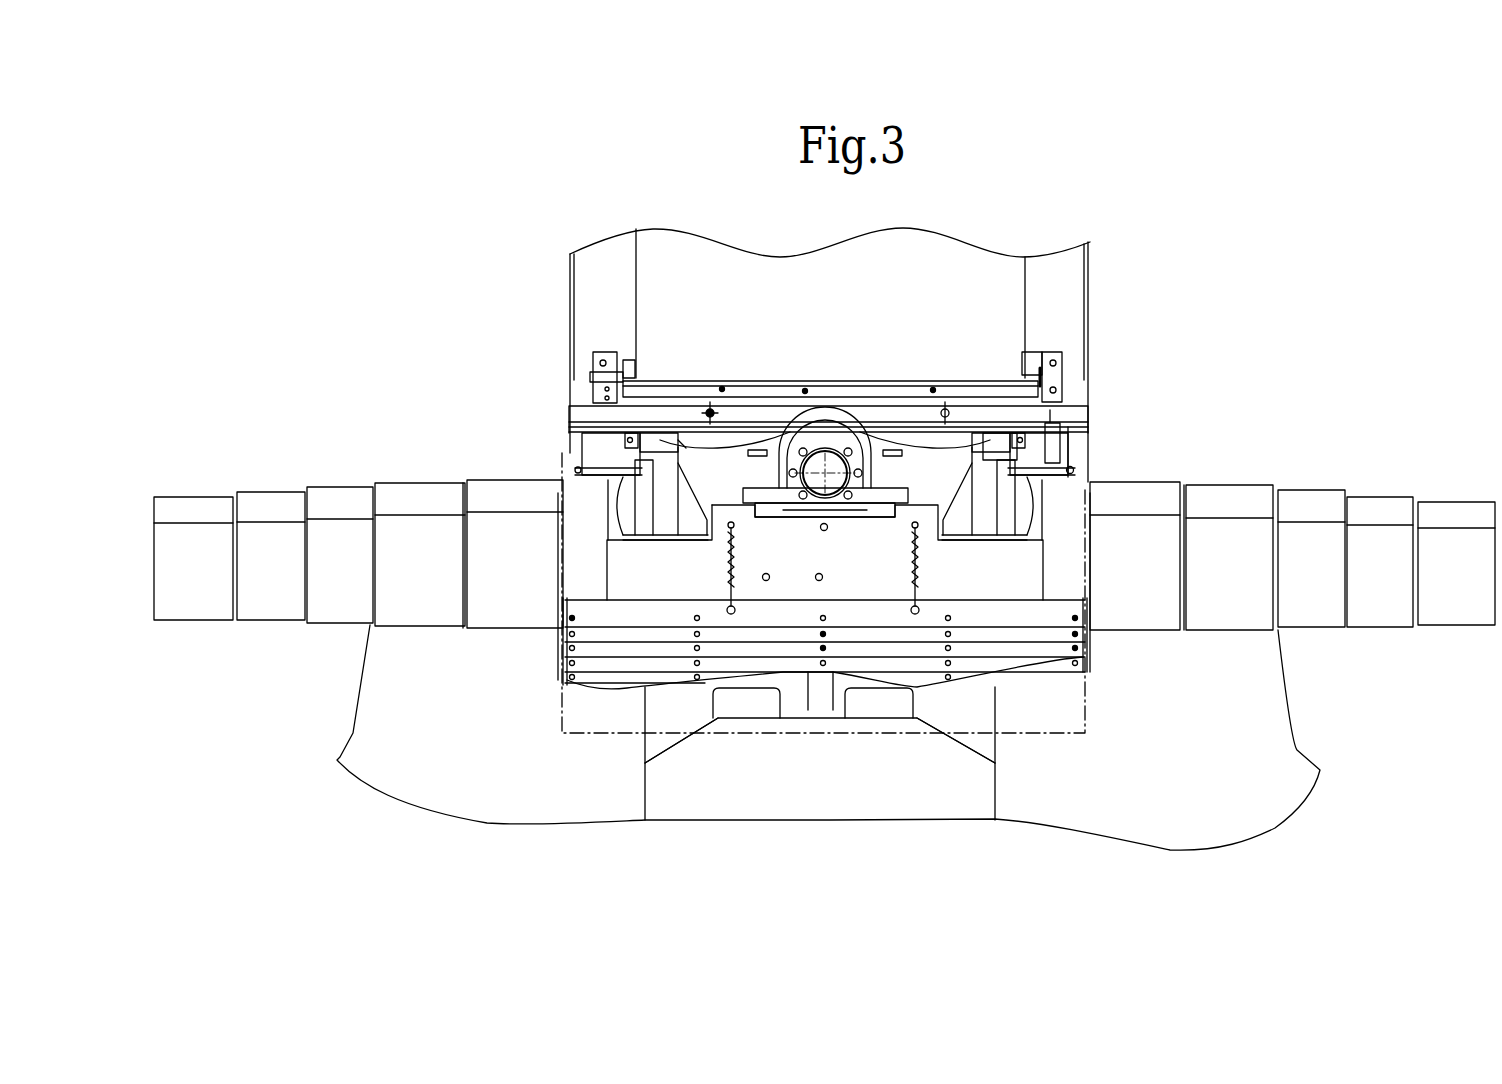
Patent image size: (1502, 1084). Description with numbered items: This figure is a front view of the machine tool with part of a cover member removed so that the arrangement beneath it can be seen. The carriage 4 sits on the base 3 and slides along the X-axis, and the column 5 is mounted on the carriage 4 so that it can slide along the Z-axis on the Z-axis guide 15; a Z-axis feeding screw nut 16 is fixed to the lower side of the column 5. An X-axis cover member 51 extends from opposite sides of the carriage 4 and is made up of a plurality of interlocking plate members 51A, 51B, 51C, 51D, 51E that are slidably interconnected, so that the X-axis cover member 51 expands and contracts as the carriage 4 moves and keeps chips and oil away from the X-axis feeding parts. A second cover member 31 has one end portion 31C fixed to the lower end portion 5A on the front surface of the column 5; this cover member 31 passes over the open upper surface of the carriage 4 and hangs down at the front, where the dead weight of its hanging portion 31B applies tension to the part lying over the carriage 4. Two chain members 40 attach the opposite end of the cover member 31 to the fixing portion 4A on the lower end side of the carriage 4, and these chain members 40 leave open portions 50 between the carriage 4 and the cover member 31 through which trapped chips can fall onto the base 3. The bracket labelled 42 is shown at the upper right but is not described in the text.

The base 3 is at (1075, 772).
The carriage 4 is at (643, 512).
The fixing portion 4A is at (1038, 470).
The column 5 is at (580, 348).
The lower end portion 5A is at (582, 388).
The Z-axis guide 15 is at (998, 445).
The Z-axis feeding screw nut 16 is at (836, 464).
The cover member 31 is at (573, 425).
The hanging portion 31B is at (680, 612).
The end portion 31C is at (585, 413).
The chain member 40 is at (727, 560).
The bracket 42 is at (1040, 377).
The open portion 50 is at (992, 592).
The X-axis cover member 51 is at (817, 524).
The interlocking plate member 51A is at (470, 628).
The interlocking plate member 51B is at (390, 623).
The interlocking plate member 51C is at (325, 620).
The interlocking plate member 51D is at (248, 618).
The interlocking plate member 51E is at (170, 618).